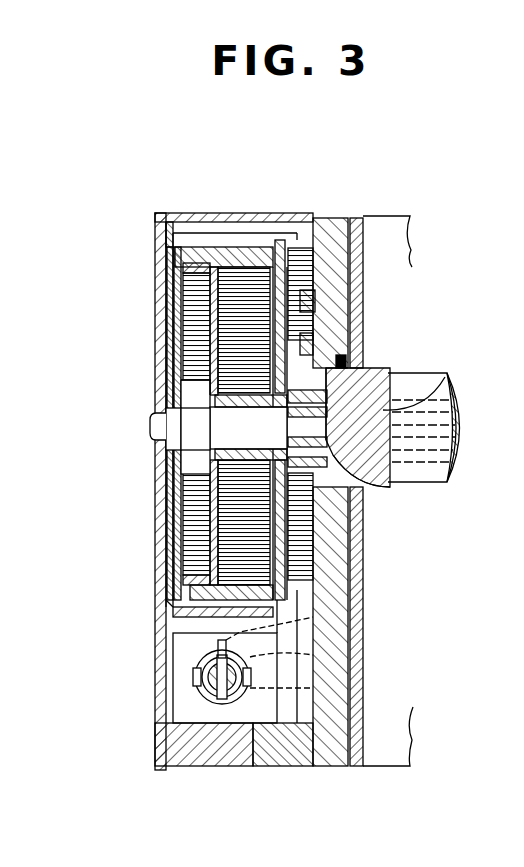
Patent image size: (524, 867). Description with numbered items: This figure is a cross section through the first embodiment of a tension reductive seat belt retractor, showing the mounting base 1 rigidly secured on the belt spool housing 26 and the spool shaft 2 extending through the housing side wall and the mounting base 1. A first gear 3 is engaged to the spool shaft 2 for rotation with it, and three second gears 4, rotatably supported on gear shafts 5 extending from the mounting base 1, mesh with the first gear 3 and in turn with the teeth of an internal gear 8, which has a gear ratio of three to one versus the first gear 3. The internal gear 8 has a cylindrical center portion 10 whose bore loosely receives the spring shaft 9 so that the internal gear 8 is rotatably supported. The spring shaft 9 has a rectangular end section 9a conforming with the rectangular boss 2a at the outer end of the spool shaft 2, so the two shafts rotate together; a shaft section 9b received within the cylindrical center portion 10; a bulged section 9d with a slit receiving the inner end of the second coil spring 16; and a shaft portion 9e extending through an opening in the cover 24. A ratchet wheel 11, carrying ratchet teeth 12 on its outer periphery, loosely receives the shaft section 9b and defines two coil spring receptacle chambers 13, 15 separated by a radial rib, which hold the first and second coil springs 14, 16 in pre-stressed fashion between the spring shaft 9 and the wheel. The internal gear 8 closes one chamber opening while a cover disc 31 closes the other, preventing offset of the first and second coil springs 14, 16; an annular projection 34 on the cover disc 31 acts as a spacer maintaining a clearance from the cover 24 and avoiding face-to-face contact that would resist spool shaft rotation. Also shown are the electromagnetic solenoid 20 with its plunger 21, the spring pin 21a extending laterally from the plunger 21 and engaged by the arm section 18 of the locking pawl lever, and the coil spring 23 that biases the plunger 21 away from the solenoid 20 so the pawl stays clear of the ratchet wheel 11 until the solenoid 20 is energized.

The mounting base 1 is at (337, 218).
The spool shaft 2 is at (460, 438).
The rectangular boss 2a is at (378, 488).
The first gear 3 is at (365, 368).
The second gear 4 is at (358, 292).
The gear shaft 5 is at (355, 330).
The internal gear 8 is at (283, 236).
The spring shaft 9 is at (148, 429).
The rectangular end section 9a is at (455, 375).
The shaft section 9b is at (183, 405).
The bulged section 9d is at (183, 455).
The shaft portion 9e is at (148, 446).
The cylindrical center portion 10 is at (183, 478).
The ratchet wheel 11 is at (200, 240).
The ratchet teeth 12 is at (232, 240).
The coil spring receptacle chamber 13 is at (175, 598).
The first coil spring 14 is at (172, 558).
The coil spring receptacle chamber 15 is at (166, 302).
The second coil spring 16 is at (170, 334).
The arm section 18 is at (313, 617).
The electromagnetic solenoid 20 is at (263, 766).
The plunger 21 is at (190, 700).
The spring pin 21a is at (320, 688).
The coil spring 23 is at (313, 655).
The cover 24 is at (196, 766).
The belt spool housing 26 is at (392, 216).
The cover disc 31 is at (163, 274).
The annular projection 34 is at (220, 420).